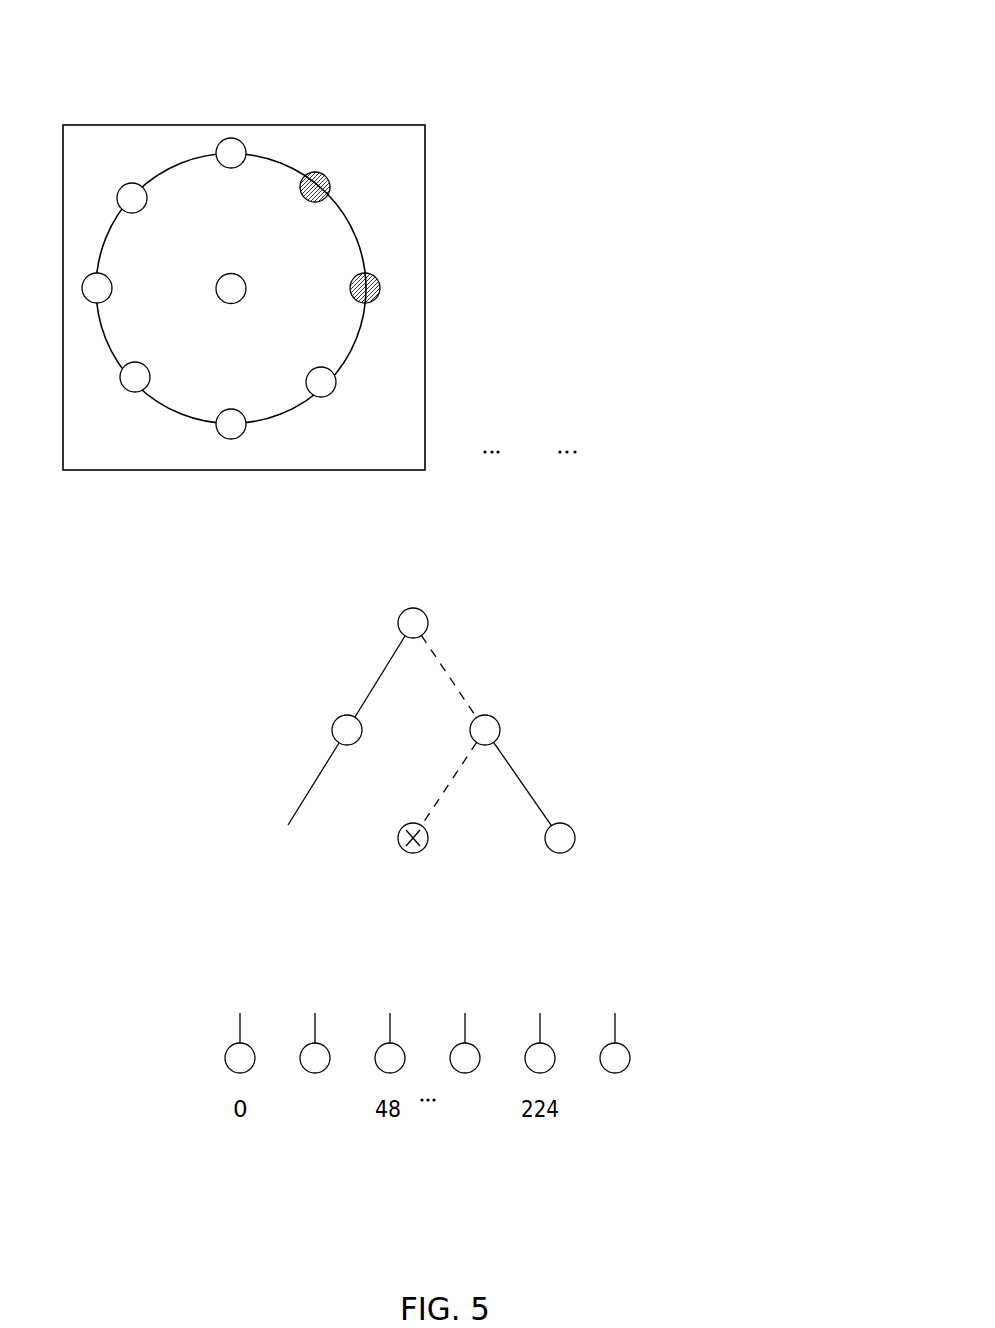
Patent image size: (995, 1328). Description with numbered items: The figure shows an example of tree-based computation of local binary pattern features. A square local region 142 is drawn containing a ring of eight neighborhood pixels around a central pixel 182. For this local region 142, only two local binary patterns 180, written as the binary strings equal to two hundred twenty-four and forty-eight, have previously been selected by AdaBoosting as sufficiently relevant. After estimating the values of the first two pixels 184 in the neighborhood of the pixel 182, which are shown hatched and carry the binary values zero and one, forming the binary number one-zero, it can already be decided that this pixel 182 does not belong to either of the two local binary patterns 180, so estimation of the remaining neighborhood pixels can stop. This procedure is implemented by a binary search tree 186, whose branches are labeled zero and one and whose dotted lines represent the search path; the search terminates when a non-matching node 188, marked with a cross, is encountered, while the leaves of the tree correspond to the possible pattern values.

The local region 142 is at (368, 115).
The local binary patterns 180 is at (670, 41).
The pixel 182 is at (217, 273).
The first two pixels 184 is at (330, 184).
The binary search tree 186 is at (625, 800).
The non-matching node 188 is at (403, 852).